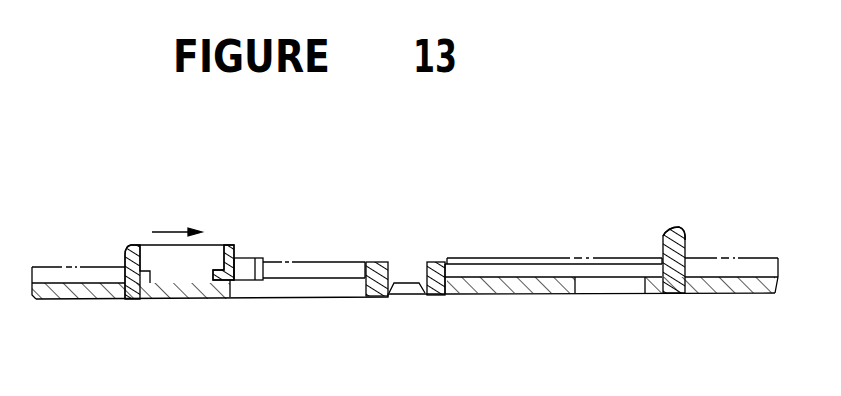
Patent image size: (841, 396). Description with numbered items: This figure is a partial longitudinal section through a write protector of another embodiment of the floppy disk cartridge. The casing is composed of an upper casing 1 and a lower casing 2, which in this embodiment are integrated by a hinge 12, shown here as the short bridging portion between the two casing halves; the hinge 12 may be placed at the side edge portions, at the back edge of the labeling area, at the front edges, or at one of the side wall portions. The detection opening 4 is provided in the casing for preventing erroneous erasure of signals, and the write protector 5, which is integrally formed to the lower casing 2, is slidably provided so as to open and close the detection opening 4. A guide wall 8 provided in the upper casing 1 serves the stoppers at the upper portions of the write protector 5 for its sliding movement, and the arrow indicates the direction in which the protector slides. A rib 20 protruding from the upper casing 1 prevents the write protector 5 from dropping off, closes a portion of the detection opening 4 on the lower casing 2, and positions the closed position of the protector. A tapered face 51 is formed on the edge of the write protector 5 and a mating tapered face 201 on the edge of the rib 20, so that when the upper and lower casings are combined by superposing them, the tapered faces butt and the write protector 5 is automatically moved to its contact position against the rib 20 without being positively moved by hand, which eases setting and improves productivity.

The upper casing 1 is at (433, 295).
The lower casing 2 is at (79, 298).
The detection opening 4 is at (288, 288).
The write protector 5 is at (166, 290).
The tapered face 51 is at (128, 248).
The guide wall 8 is at (525, 262).
The hinge 12 is at (405, 282).
The rib 20 is at (687, 248).
The tapered face 201 is at (670, 229).